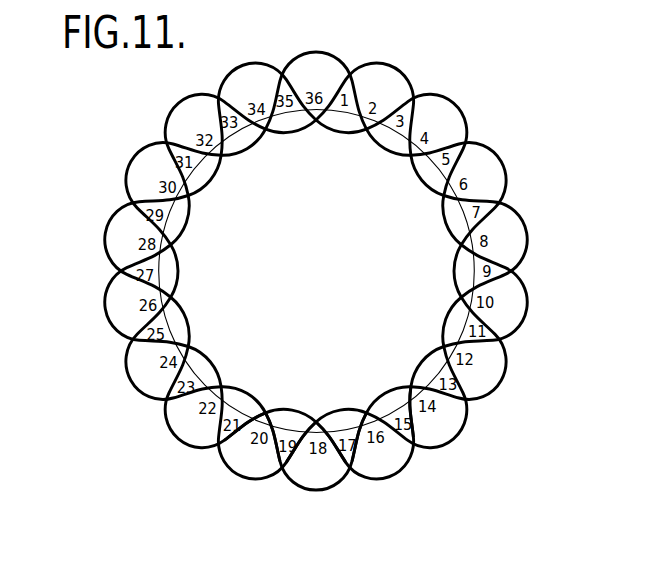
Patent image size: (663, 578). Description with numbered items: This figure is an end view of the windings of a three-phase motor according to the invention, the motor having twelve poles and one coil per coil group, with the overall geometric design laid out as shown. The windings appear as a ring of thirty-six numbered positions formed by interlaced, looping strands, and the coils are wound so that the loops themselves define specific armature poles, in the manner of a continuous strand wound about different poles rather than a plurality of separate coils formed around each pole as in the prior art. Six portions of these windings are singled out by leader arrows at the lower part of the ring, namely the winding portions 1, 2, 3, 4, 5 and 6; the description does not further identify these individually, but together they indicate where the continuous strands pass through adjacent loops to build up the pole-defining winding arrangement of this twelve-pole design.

The first strand segment 1 is at (215, 431).
The second strand segment 2 is at (272, 455).
The third strand segment 3 is at (332, 460).
The fourth strand segment 4 is at (298, 462).
The fifth strand segment 5 is at (362, 457).
The sixth strand segment 6 is at (422, 428).